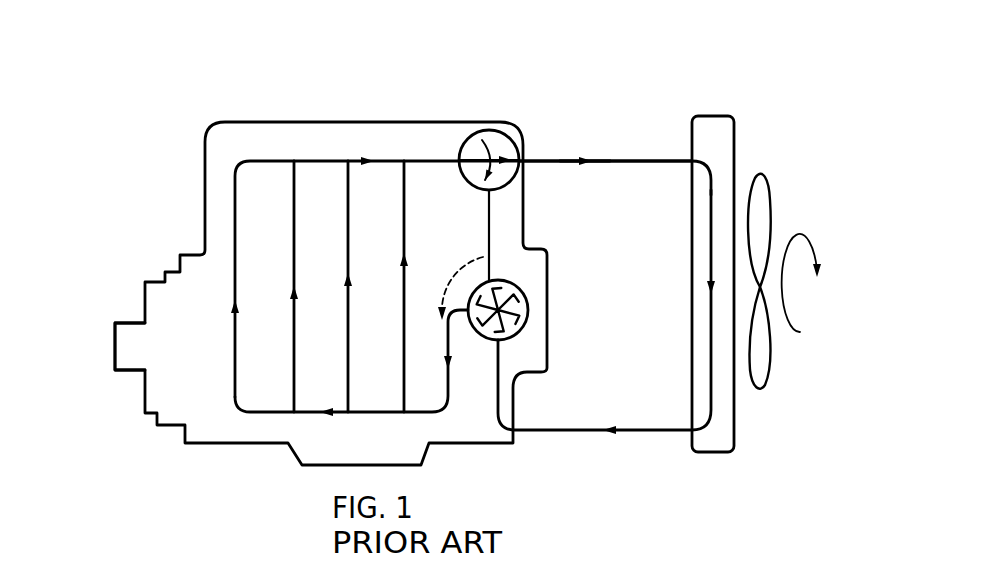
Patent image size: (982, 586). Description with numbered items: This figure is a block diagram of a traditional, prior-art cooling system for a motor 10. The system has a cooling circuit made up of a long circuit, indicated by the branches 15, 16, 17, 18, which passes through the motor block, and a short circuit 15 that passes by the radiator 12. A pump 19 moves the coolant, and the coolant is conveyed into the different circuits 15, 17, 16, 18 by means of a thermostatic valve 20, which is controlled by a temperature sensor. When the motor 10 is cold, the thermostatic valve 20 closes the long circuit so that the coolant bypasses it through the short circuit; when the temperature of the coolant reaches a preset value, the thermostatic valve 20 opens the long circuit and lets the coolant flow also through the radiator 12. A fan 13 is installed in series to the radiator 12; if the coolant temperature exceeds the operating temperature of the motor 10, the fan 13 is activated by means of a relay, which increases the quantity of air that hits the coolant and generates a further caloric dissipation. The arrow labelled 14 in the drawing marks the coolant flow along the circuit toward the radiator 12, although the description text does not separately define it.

The motor 10 is at (310, 140).
The radiator 12 is at (715, 133).
The fan 13 is at (760, 238).
The coolant flow 14 is at (563, 143).
The short circuit 15 is at (230, 362).
The long circuit portion 16 is at (713, 385).
The long circuit portion 17 is at (640, 153).
The long circuit portion 18 is at (648, 430).
The pump 19 is at (480, 343).
The thermostatic valve 20 is at (495, 143).